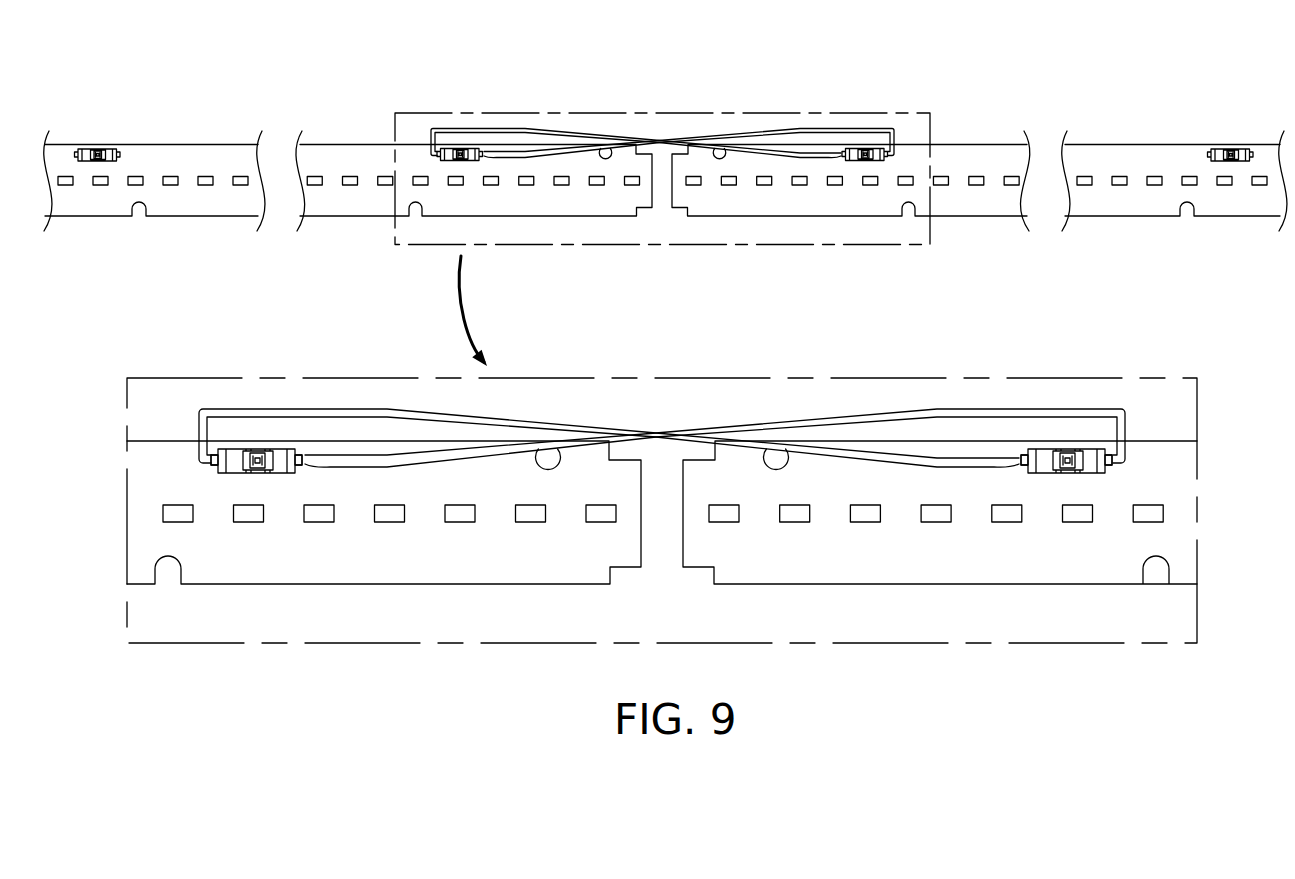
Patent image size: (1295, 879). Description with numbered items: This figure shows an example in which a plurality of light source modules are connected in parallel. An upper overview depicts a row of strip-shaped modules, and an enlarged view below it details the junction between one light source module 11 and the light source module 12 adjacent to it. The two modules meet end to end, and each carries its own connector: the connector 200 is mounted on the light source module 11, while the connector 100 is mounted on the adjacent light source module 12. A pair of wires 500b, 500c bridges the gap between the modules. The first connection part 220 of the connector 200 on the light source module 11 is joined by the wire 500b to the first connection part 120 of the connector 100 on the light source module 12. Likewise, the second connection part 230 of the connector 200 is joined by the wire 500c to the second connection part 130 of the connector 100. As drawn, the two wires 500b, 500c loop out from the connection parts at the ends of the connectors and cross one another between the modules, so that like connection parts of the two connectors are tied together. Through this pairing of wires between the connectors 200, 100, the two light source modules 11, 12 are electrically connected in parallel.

The light source module 11 is at (369, 141).
The light source module 12 is at (968, 141).
The connector 100 is at (1077, 444).
The first connection part 120 is at (1024, 467).
The second connection part 130 is at (1120, 468).
The connector 200 is at (264, 444).
The first connection part 220 is at (208, 465).
The second connection part 230 is at (307, 465).
The wire 500b is at (497, 420).
The wire 500c is at (832, 420).